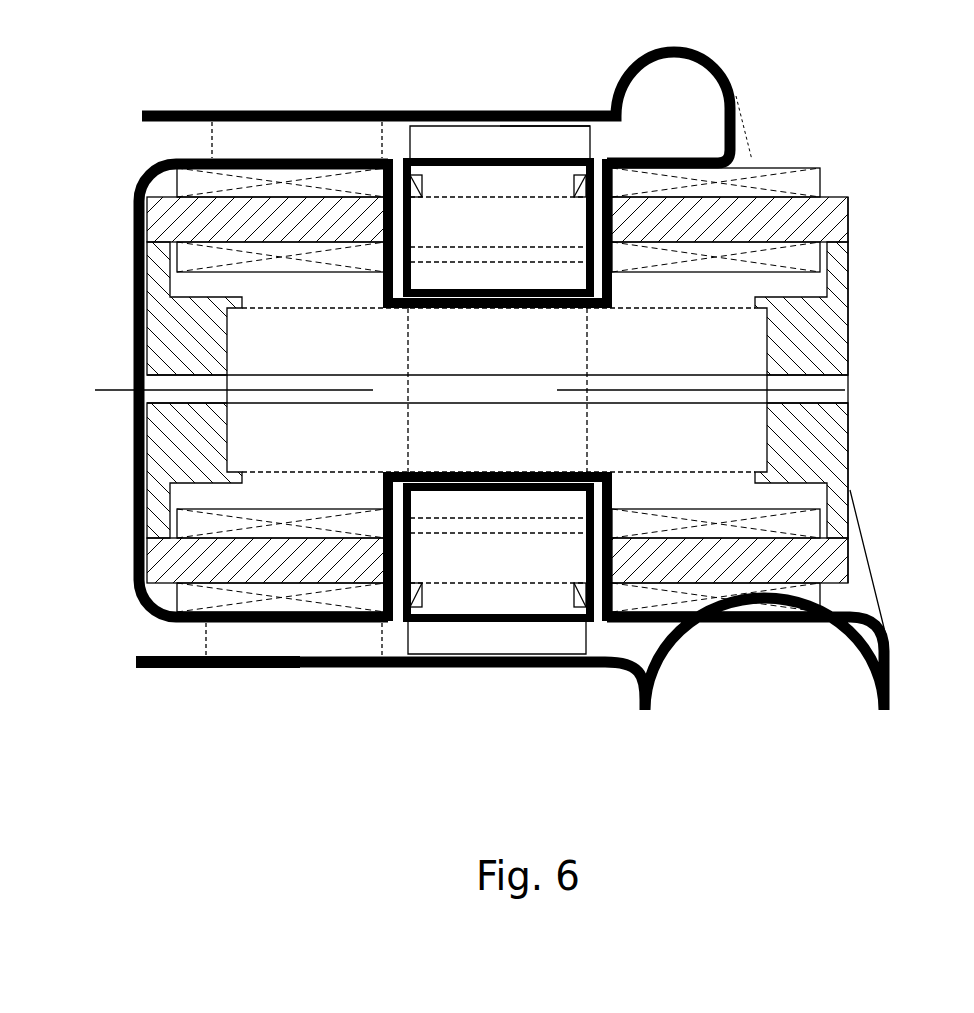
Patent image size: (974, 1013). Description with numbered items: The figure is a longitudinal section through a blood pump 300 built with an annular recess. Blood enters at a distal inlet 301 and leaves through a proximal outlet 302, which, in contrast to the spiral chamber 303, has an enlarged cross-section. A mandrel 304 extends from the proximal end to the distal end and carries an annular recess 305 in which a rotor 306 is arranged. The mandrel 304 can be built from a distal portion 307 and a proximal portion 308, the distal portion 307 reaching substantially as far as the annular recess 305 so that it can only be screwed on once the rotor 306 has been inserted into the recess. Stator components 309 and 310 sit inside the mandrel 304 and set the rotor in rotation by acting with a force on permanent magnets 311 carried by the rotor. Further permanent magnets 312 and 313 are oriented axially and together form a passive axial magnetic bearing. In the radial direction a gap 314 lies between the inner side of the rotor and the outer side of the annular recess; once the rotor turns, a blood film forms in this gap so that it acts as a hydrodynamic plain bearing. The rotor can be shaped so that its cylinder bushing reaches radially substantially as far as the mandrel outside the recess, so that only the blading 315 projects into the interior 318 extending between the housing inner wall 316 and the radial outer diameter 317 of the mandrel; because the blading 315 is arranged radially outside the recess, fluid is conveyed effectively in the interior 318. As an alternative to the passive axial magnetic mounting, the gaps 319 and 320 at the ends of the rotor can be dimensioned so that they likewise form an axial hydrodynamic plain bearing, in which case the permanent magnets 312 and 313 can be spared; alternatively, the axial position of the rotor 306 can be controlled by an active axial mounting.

The blood pump 300 is at (910, 180).
The distal inlet 301 is at (109, 575).
The proximal outlet 302 is at (857, 672).
The spiral chamber 303 is at (696, 114).
The mandrel 304 is at (889, 357).
The annular recess 305 is at (478, 690).
The rotor 306 is at (462, 140).
The distal portion 307 is at (142, 188).
The proximal portion 308 is at (848, 475).
The stator component 309 is at (188, 523).
The stator component 310 is at (808, 258).
The permanent magnets 311 is at (545, 550).
The permanent magnet 312 is at (545, 277).
The permanent magnet 313 is at (340, 330).
The gap 314 is at (567, 485).
The blading 315 is at (512, 133).
The housing inner wall 316 is at (222, 668).
The radial outer diameter 317 is at (173, 622).
The interior 318 is at (298, 637).
The gap 319 is at (598, 190).
The gap 320 is at (397, 182).